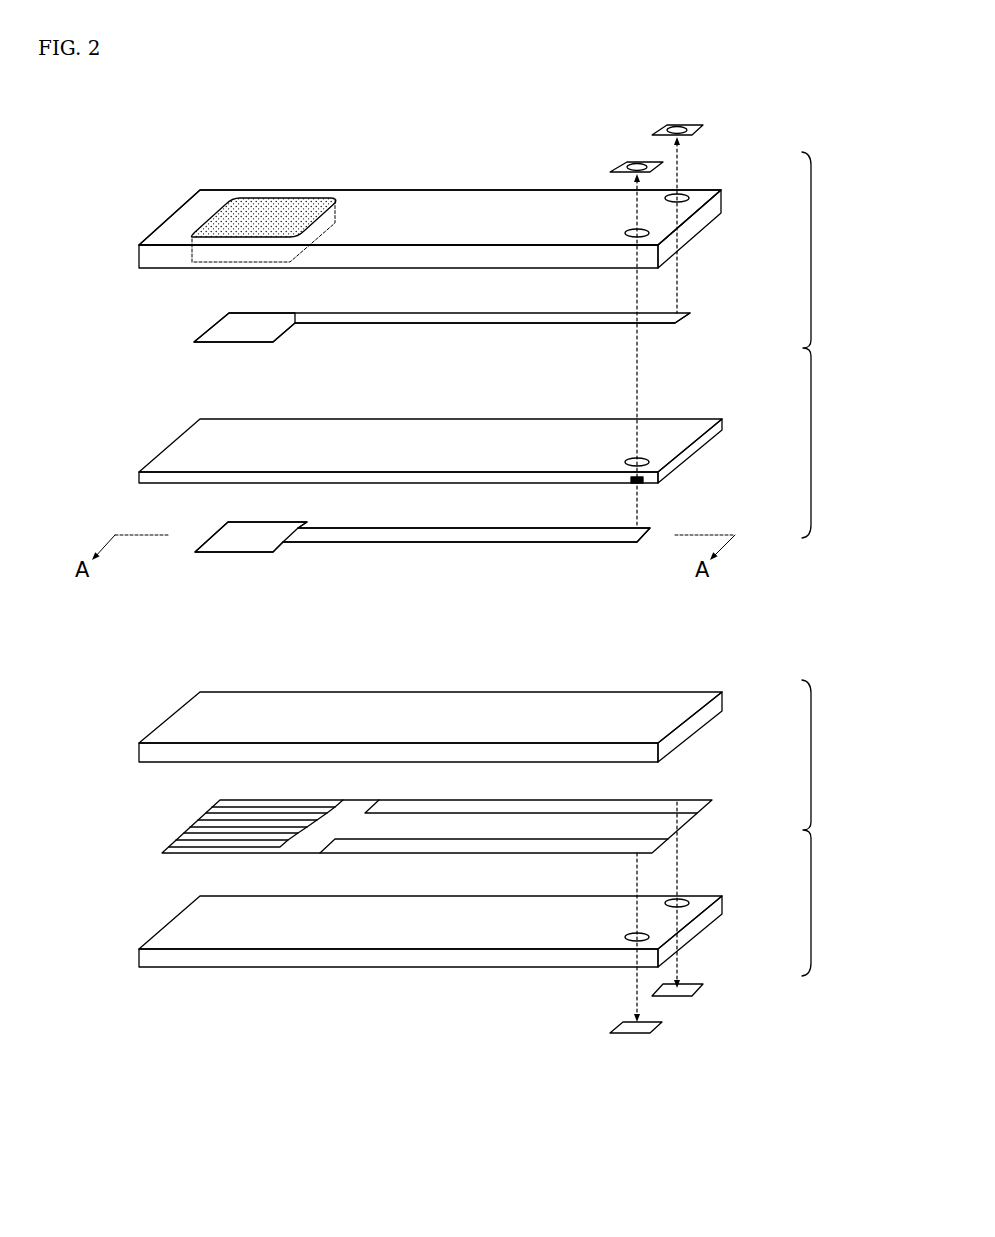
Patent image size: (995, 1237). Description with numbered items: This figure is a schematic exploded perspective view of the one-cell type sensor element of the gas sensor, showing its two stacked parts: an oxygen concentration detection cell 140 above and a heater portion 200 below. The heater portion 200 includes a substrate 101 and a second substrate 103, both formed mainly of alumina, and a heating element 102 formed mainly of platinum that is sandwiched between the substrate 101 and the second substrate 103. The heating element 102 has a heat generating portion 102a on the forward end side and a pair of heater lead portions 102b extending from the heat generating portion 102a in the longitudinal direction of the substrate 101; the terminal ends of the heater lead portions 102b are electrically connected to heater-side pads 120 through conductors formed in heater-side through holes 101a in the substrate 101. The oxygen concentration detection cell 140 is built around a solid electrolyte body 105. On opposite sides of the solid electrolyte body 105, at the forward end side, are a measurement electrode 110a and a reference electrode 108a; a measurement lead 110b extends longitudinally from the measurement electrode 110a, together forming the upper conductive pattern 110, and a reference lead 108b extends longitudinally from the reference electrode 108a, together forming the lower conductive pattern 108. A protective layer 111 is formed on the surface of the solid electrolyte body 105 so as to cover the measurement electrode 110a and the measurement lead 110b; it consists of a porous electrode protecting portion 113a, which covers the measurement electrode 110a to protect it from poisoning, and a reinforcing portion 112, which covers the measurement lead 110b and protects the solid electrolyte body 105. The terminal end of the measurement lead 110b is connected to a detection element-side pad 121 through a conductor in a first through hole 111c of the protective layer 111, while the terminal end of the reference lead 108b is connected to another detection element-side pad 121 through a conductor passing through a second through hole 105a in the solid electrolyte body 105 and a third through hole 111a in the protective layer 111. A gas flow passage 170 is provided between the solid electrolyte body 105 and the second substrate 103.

The protective layer 111 is at (712, 244).
The third through hole 111a is at (625, 233).
The first through hole 111c is at (679, 192).
The reinforcing portion 112 is at (414, 200).
The electrode protecting portion 113a is at (258, 212).
The detection element-side pad 121 is at (658, 131).
The measurement electrode and lead layer 110 is at (712, 318).
The measurement electrode 110a is at (252, 325).
The measurement lead 110b is at (478, 325).
The solid electrolyte body 105 is at (716, 455).
The second through hole 105a is at (625, 462).
The gas flow passage 170 is at (645, 487).
The reference electrode and lead layer 108 is at (656, 524).
The reference electrode 108a is at (247, 535).
The reference lead 108b is at (480, 540).
The oxygen concentration detection cell 140 is at (832, 345).
The second substrate 103 is at (716, 738).
The heating element 102 is at (712, 828).
The heat generating portion 102a is at (200, 826).
The heater lead portions 102b is at (505, 808).
The substrate 101 is at (716, 942).
The heater-side through holes 101a is at (640, 930).
The heater-side pads 120 is at (660, 1025).
The heater portion 200 is at (831, 828).